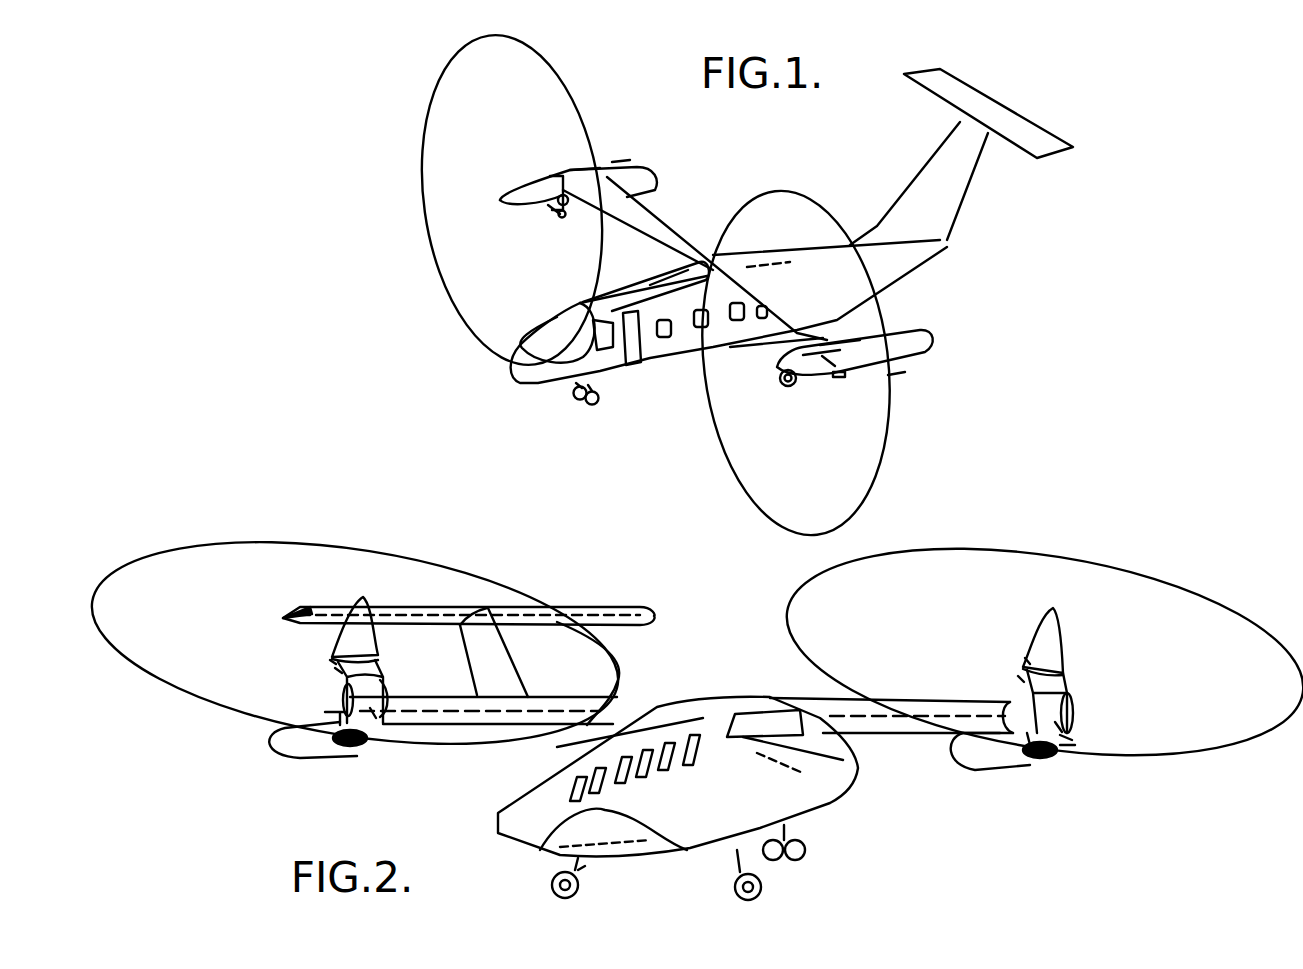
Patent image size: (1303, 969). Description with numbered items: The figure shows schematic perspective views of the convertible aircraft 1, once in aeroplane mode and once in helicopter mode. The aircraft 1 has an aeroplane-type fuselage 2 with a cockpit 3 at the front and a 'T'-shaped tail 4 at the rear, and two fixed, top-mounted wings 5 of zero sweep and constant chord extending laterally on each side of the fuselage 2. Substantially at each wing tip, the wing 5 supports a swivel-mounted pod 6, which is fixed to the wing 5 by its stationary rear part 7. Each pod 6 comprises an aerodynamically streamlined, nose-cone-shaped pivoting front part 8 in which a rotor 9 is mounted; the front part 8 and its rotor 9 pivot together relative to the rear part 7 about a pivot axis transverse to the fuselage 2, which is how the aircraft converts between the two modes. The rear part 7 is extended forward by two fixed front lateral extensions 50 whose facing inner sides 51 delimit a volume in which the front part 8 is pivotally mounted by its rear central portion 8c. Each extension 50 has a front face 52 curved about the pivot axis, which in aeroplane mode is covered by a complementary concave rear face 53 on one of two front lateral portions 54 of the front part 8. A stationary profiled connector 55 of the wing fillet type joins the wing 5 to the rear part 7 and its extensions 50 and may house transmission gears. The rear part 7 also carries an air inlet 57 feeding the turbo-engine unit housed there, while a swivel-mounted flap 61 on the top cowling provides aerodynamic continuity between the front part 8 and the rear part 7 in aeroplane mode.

In FIG. 1, the convertible aircraft 1 is at (627, 410).
In FIG. 2, the convertible aircraft 1 is at (687, 630).
In FIG. 1, the fuselage 2 is at (653, 350).
In FIG. 2, the fuselage 2 is at (557, 820).
In FIG. 1, the cockpit 3 is at (567, 327).
In FIG. 2, the cockpit 3 is at (803, 733).
In FIG. 1, the T-shaped tail 4 is at (1020, 127).
In FIG. 2, the T-shaped tail 4 is at (488, 610).
In FIG. 1, the fixed wing 5 is at (660, 223).
In FIG. 2, the fixed wing 5 is at (432, 710).
In FIG. 1, the swivel-mounted pod 6 is at (622, 160).
In FIG. 2, the swivel-mounted pod 6 is at (322, 712).
In FIG. 1, the stationary rear part 7 is at (638, 177).
In FIG. 2, the stationary rear part 7 is at (283, 730).
In FIG. 1, the pivoting front part 8 is at (513, 200).
In FIG. 2, the pivoting front part 8 is at (373, 660).
In FIG. 1, the rear central portion 8c is at (550, 183).
In FIG. 2, the rear central portion 8c is at (390, 698).
In FIG. 1, the rotor 9 is at (422, 164).
In FIG. 2, the rotor 9 is at (310, 550).
In FIG. 1, the fixed front lateral extension 50 is at (550, 210).
In FIG. 2, the fixed front lateral extension 50 is at (340, 713).
In FIG. 2, the inner side 51 is at (373, 713).
In FIG. 2, the front face 52 is at (347, 695).
In FIG. 2, the rear face 53 is at (337, 670).
In FIG. 2, the front lateral portion 54 is at (332, 662).
In FIG. 2, the stationary profiled connector 55 is at (1000, 703).
In FIG. 1, the air inlet 57 is at (562, 218).
In FIG. 2, the air inlet 57 is at (353, 750).
In FIG. 1, the swivel-mounted flap 61 is at (577, 167).